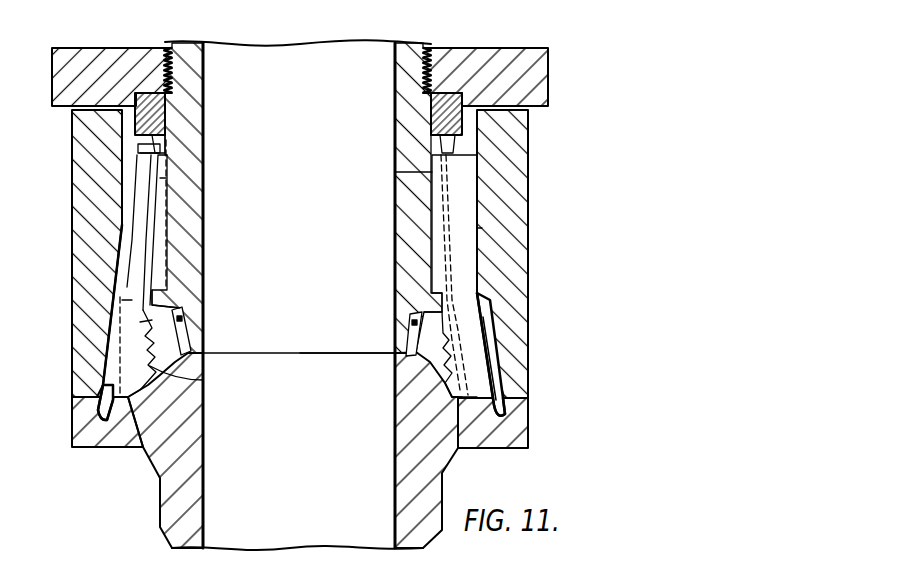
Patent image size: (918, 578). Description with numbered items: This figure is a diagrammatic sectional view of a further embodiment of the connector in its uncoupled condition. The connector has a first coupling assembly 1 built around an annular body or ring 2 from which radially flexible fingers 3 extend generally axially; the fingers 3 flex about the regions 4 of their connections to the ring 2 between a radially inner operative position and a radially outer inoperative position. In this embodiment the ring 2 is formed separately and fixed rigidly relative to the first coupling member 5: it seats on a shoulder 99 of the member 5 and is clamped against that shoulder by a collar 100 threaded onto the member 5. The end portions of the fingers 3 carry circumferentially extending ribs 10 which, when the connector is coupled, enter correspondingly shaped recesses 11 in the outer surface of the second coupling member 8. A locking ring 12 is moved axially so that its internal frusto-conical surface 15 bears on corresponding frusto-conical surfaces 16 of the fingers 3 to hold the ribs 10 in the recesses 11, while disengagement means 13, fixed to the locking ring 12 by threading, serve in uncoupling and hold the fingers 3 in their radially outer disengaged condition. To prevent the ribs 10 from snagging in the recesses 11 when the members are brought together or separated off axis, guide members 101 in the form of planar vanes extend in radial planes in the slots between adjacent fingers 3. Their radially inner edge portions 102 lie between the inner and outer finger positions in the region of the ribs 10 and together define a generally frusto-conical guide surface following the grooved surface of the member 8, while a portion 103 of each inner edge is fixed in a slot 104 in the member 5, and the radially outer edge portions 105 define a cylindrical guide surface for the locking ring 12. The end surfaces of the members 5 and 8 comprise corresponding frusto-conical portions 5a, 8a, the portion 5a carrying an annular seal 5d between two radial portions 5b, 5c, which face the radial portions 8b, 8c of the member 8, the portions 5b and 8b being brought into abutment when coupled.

The first coupling assembly 1 is at (127, 209).
The annular body or ring 2 is at (163, 112).
The radially flexible fingers 3 is at (130, 305).
The regions of connection 4 is at (138, 147).
The first coupling member 5 is at (196, 212).
The frusto-conical portion 5a is at (148, 322).
The radial portion 5b is at (452, 322).
The radial portion 5c is at (335, 358).
The annular seal 5d is at (182, 318).
The second coupling member 8 is at (425, 490).
The frusto-conical portion 8a is at (188, 350).
The radial portion 8b is at (160, 300).
The radial portion 8c is at (278, 353).
The ribs 10 is at (203, 380).
The recesses 11 is at (146, 340).
The locking ring 12 is at (92, 182).
The disengagement means 13 is at (520, 440).
The internal frusto-conical surface 15 is at (122, 270).
The frusto-conical surfaces 16 is at (75, 378).
The shoulder 99 is at (150, 153).
The collar 100 is at (540, 80).
The guide members 101 is at (128, 235).
The radially inner edge portions 102 is at (412, 333).
The portion of radially inner edge 103 is at (412, 172).
The slot 104 is at (160, 178).
The radially outer edge portions 105 is at (482, 228).